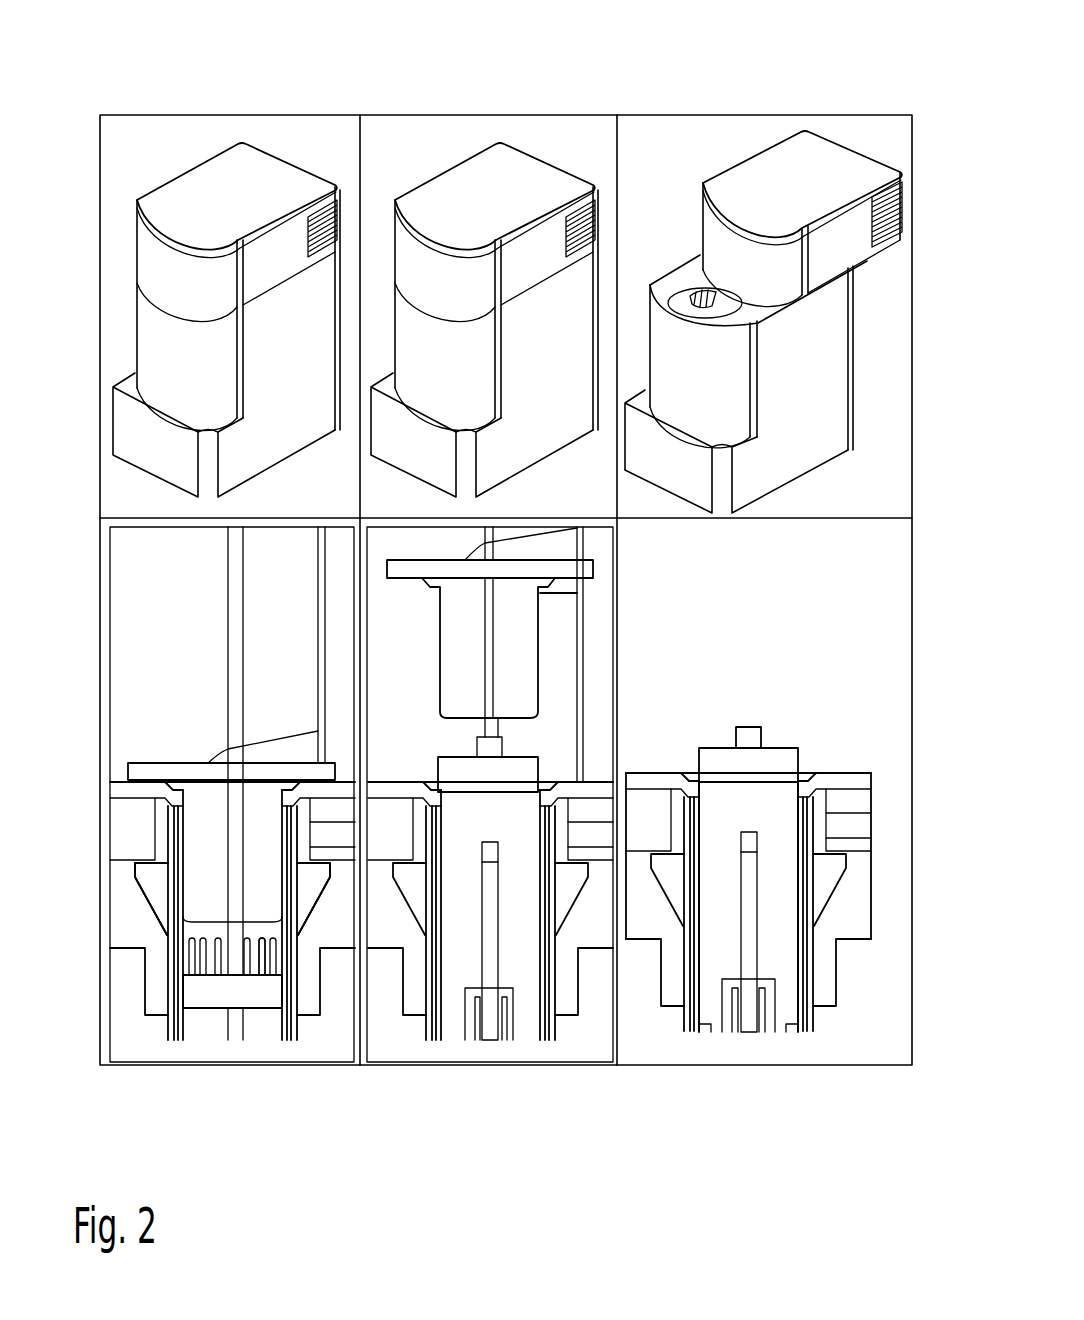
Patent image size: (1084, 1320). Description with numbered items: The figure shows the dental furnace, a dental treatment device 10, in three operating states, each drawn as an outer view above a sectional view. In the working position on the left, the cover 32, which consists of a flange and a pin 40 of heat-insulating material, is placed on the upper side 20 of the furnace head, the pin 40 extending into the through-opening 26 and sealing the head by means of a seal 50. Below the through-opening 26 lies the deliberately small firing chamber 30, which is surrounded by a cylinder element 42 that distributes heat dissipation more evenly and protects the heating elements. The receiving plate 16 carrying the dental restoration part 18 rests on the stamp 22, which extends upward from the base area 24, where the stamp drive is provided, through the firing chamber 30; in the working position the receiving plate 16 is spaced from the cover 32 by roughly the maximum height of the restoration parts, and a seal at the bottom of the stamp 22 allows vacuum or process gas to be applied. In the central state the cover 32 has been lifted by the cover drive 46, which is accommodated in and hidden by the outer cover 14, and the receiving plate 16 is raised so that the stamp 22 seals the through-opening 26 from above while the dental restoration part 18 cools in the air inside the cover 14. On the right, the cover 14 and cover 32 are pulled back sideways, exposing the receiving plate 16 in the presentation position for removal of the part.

The dental treatment device 10 is at (473, 256).
The cover 14 is at (240, 180).
The receiving plate 16 is at (195, 995).
The dental restoration part 18 is at (762, 740).
The upper side 20 is at (671, 760).
The stamp 22 is at (235, 1023).
The base area 24 is at (135, 440).
The through-opening 26 is at (507, 818).
The firing chamber 30 is at (258, 932).
The cover 32 is at (150, 773).
The pin 40 is at (205, 890).
The cylinder element 42 is at (177, 966).
The cover drive 46 is at (562, 625).
The seal 50 is at (125, 792).